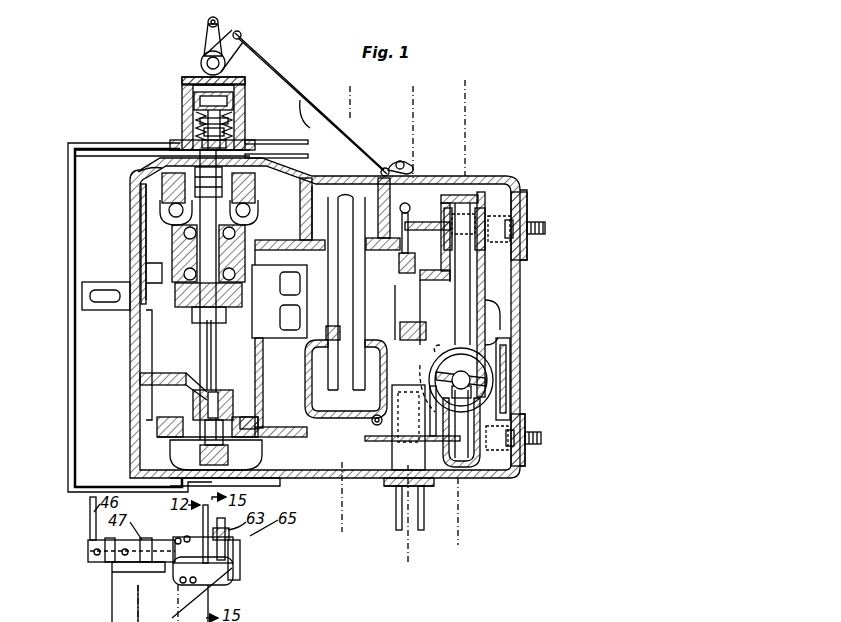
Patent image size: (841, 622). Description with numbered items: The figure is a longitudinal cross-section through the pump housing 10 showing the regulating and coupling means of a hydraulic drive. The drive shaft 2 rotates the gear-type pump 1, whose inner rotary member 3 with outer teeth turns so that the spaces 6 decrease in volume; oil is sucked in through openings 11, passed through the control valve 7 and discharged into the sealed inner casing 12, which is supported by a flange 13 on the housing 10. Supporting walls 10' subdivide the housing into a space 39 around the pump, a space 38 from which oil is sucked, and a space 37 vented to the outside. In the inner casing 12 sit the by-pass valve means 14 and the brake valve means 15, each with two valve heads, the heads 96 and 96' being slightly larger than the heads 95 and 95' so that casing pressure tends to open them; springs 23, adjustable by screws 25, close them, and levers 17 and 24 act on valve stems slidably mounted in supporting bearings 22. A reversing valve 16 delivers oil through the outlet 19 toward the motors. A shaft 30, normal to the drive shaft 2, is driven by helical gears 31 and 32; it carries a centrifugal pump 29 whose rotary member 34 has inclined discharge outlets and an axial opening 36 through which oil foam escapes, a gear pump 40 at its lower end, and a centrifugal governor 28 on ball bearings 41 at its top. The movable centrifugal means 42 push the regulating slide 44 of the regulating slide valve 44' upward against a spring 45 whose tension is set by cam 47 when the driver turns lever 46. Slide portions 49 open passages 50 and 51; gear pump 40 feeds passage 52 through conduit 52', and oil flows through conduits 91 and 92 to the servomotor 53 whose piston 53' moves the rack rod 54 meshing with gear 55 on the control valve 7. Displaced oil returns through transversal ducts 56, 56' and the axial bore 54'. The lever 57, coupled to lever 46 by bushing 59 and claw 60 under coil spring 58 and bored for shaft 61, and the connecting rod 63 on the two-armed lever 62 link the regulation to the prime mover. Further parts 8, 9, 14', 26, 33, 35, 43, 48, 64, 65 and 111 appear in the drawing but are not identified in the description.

The pump 1 is at (345, 205).
The drive shaft 2 is at (222, 310).
The inner rotary member 3 is at (462, 312).
The spaces 6 is at (409, 326).
The control valve 7 is at (398, 332).
The chamber 8 is at (262, 255).
The body wall 9 is at (323, 186).
The housing 10 is at (328, 310).
The supporting walls 10' is at (292, 447).
The openings 11 is at (292, 280).
The inner casing 12 is at (486, 306).
The flange 13 is at (510, 346).
The by-pass valve means 14 is at (454, 251).
The channel branch 14' is at (480, 263).
The brake valve means 15 is at (460, 440).
The reversing valve 16 is at (490, 384).
The lever 17 is at (414, 222).
The outlet 19 is at (510, 366).
The supporting bearings 22 is at (440, 212).
The springs 23 is at (512, 208).
The lever 24 is at (378, 426).
The screws 25 is at (540, 222).
The boss 26 is at (528, 210).
The centrifugal governor 28 is at (165, 208).
The centrifugal pump 29 is at (194, 400).
The shaft 30 is at (200, 345).
The helical gear 31 is at (192, 314).
The helical gear 32 is at (178, 296).
The seat 33 is at (178, 455).
The rotary member 34 is at (158, 420).
The diaphragm 35 is at (160, 385).
The axial opening 36 is at (196, 380).
The space 37 is at (146, 268).
The space 38 is at (278, 380).
The space 39 is at (366, 405).
The gear pump 40 is at (200, 476).
The ball bearings 41 is at (172, 240).
The centrifugal means 42 is at (142, 180).
The flange 43 is at (150, 160).
The regulating slide 44 is at (187, 113).
The regulating slide valve 44' is at (137, 139).
The spring 45 is at (188, 78).
The lever 46 is at (220, 24).
The cam 47 is at (202, 62).
The piston rod 48 is at (204, 128).
The slide portions 49 is at (194, 104).
The passage 50 is at (232, 130).
The passage 51 is at (226, 134).
The passage 52 is at (194, 139).
The conduit 52' is at (111, 317).
The servomotor 53 is at (392, 486).
The piston 53' is at (390, 503).
The rack rod 54 is at (522, 327).
The bore 54' is at (236, 68).
The gear 55 is at (490, 330).
The transversal ducts 56 is at (251, 133).
The transversal ducts 56' is at (239, 102).
The lever 57 is at (210, 524).
The coil spring 58 is at (180, 538).
The bushing 59 is at (178, 548).
The claw 60 is at (210, 594).
The shaft 61 is at (240, 548).
The two-armed lever 62 is at (405, 172).
The connecting rod 63 is at (312, 106).
The housing 64 is at (236, 574).
The lever 65 is at (242, 33).
The conduit 91 is at (308, 128).
The conduit 92 is at (308, 156).
The valve head 95 is at (489, 182).
The valve head 95' is at (445, 459).
The valve head 96 is at (527, 184).
The valve head 96' is at (492, 477).
The post 111 is at (228, 518).